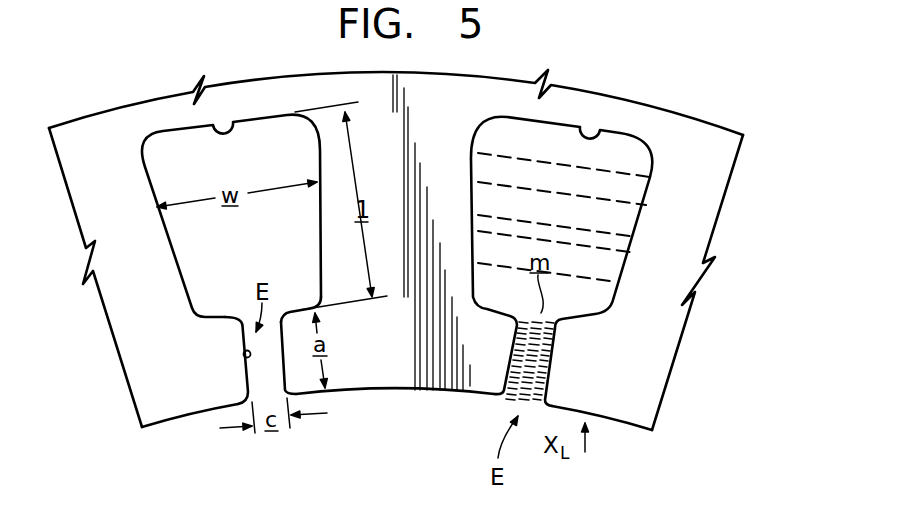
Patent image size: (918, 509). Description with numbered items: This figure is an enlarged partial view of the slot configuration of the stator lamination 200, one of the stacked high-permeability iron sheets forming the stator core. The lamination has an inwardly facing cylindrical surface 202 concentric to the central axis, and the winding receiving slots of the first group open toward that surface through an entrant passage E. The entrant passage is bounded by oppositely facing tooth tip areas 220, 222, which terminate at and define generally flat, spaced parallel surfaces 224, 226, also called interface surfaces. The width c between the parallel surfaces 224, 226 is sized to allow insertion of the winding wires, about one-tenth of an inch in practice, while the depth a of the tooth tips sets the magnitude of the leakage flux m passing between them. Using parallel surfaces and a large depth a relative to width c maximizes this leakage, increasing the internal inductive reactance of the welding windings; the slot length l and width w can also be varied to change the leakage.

The lamination 200 is at (673, 356).
The inwardly facing cylindrical surface 202 is at (432, 392).
The tooth tip area 220 is at (226, 338).
The tooth tip area 222 is at (288, 313).
The parallel surface 224 is at (244, 361).
The parallel surface 226 is at (281, 358).